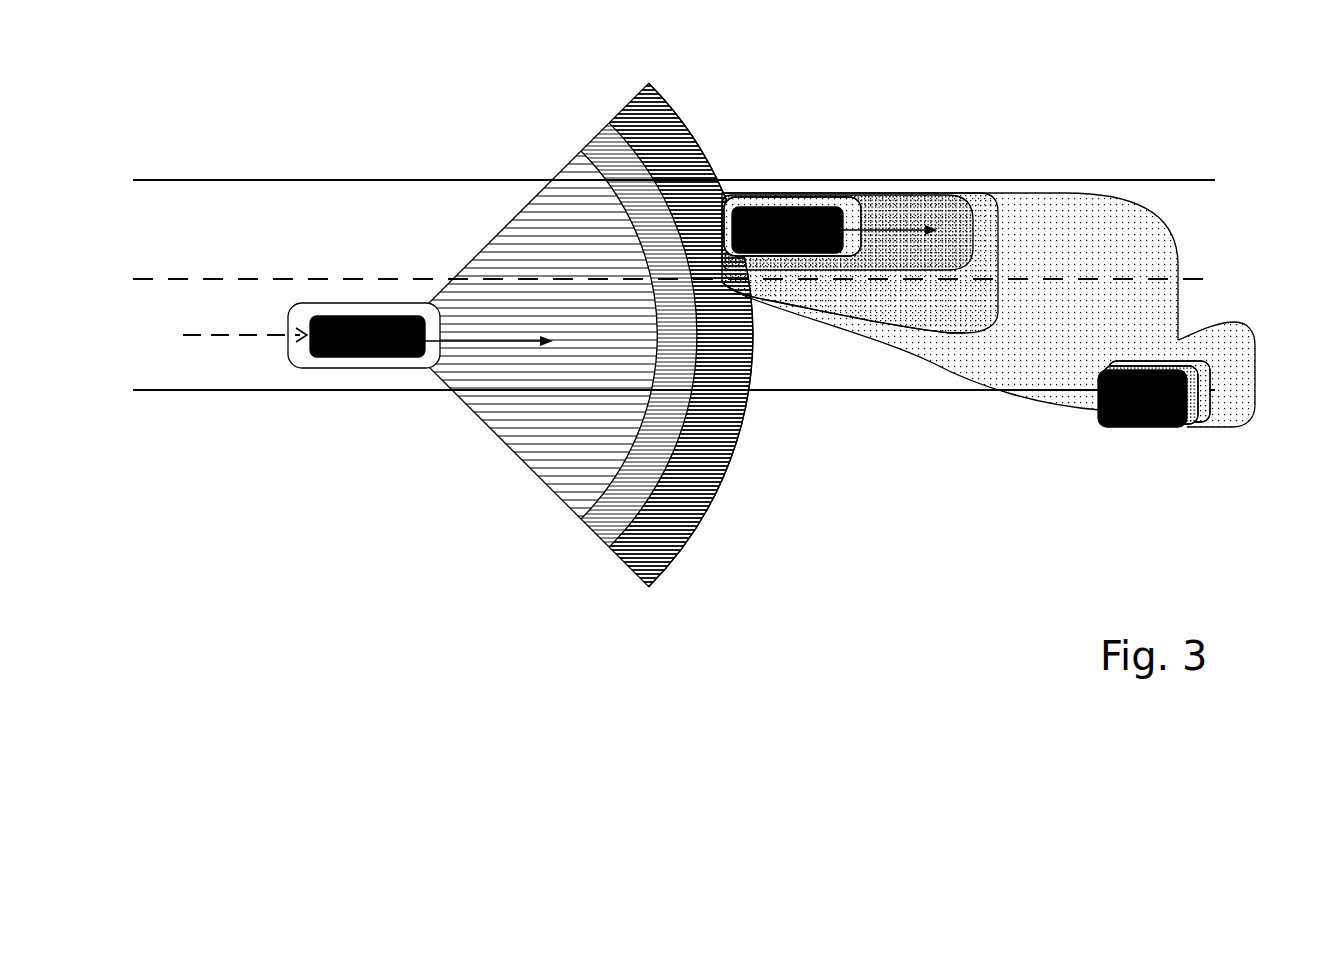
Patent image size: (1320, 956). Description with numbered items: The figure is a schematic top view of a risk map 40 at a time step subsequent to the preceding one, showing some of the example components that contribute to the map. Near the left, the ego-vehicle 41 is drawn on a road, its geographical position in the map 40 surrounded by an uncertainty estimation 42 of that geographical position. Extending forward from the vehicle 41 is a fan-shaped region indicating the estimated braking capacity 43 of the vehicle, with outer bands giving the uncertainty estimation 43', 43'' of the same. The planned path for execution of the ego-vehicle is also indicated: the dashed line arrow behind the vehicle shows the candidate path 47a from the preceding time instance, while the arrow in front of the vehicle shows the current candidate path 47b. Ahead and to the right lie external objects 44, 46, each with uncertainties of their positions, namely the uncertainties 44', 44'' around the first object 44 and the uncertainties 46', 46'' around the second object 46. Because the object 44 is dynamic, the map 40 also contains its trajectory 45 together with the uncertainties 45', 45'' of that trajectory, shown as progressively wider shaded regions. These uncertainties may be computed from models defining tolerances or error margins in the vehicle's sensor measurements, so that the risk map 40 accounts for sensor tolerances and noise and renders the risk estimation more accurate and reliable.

The risk map 40 is at (446, 610).
The vehicle 41 is at (358, 340).
The uncertainty estimation of the geographical position 42 is at (318, 368).
The estimated braking capacity 43 is at (575, 334).
The uncertainty estimation of braking capacity 43' is at (628, 376).
The uncertainty estimation of braking capacity 43'' is at (679, 377).
The external object 44 is at (834, 175).
The uncertainty of the position of the external object 44' is at (792, 177).
The uncertainty of the position of the external object 44'' is at (894, 193).
The trajectory 45 is at (860, 199).
The uncertainty of the trajectory 45' is at (843, 329).
The uncertainty of the trajectory 45'' is at (988, 339).
The external object 46 is at (1124, 437).
The uncertainty of the position of the external object 46' is at (1156, 432).
The uncertainty of the position of the external object 46'' is at (1228, 341).
The candidate path 47a is at (257, 330).
The current candidate path 47b is at (500, 337).